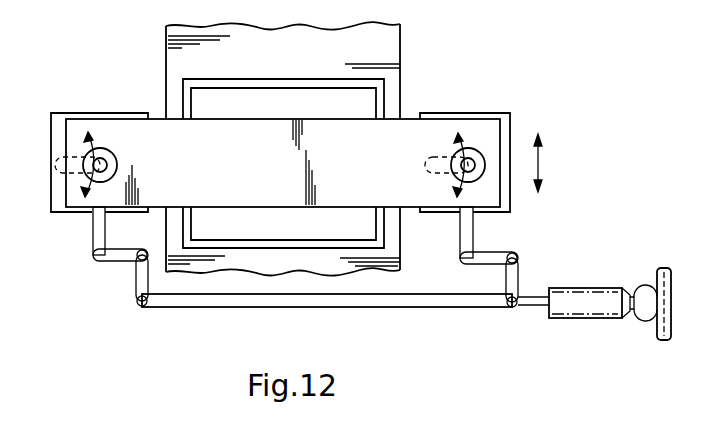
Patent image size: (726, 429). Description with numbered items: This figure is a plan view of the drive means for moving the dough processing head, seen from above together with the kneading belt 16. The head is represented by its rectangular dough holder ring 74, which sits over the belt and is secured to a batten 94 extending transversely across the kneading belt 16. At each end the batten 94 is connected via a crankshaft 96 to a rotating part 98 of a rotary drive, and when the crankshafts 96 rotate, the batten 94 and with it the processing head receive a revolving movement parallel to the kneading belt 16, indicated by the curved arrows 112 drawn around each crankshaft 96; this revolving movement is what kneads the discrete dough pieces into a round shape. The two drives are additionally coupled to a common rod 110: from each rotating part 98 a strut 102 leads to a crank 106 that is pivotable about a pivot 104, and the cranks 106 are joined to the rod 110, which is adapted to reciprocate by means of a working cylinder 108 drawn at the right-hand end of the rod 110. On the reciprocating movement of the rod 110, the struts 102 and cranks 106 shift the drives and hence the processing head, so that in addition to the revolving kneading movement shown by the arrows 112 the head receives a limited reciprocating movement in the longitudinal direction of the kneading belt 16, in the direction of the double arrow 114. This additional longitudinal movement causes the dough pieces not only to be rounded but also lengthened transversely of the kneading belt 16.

The kneading belt 16 is at (393, 42).
The dough holder ring 74 is at (275, 83).
The batten 94 is at (158, 128).
The crankshafts 96 is at (55, 167).
The rotating parts 98 is at (56, 208).
The struts 102 is at (97, 234).
The pivots 104 is at (136, 258).
The cranks 106 is at (140, 282).
The working cylinder 108 is at (587, 303).
The rod 110 is at (296, 308).
The arrows 112 is at (84, 148).
The double arrow 114 is at (545, 165).